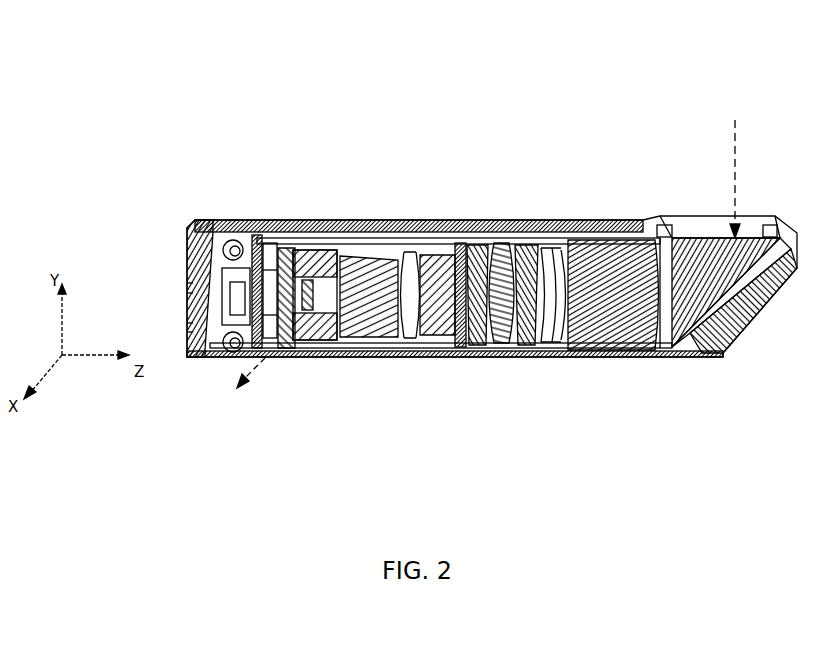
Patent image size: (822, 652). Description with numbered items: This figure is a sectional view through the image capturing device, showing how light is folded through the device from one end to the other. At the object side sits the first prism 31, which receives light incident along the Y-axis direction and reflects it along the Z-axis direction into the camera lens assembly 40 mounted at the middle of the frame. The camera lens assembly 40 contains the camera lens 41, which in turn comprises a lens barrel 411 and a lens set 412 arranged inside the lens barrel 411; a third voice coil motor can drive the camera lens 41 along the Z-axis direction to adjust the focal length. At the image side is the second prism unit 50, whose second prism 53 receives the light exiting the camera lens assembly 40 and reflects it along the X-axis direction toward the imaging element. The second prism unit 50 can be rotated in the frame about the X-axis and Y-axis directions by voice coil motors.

The first prism 31 is at (690, 238).
The camera lens assembly 40 is at (500, 267).
The camera lens 41 is at (487, 206).
The lens barrel 411 is at (450, 240).
The lens set 412 is at (532, 243).
The second prism unit 50 is at (326, 356).
The second prism 53 is at (353, 290).